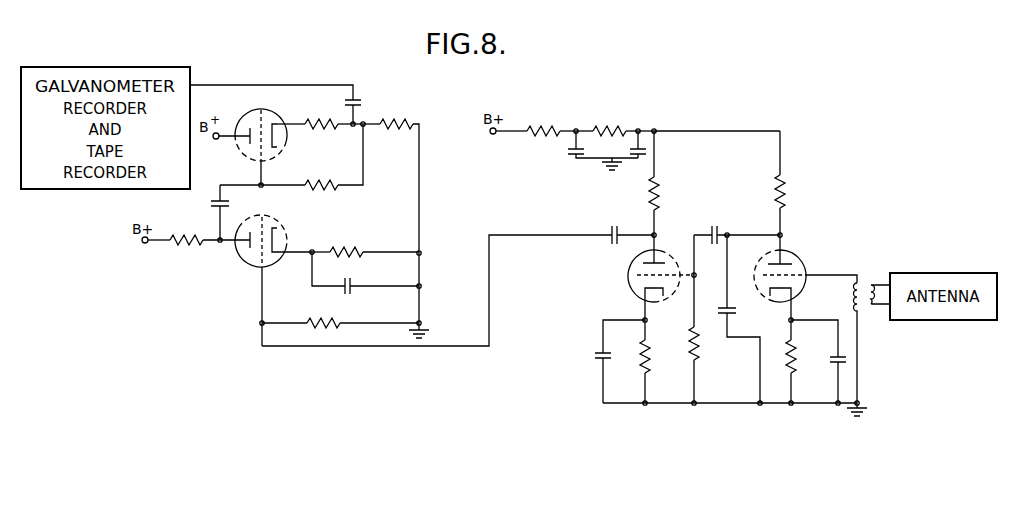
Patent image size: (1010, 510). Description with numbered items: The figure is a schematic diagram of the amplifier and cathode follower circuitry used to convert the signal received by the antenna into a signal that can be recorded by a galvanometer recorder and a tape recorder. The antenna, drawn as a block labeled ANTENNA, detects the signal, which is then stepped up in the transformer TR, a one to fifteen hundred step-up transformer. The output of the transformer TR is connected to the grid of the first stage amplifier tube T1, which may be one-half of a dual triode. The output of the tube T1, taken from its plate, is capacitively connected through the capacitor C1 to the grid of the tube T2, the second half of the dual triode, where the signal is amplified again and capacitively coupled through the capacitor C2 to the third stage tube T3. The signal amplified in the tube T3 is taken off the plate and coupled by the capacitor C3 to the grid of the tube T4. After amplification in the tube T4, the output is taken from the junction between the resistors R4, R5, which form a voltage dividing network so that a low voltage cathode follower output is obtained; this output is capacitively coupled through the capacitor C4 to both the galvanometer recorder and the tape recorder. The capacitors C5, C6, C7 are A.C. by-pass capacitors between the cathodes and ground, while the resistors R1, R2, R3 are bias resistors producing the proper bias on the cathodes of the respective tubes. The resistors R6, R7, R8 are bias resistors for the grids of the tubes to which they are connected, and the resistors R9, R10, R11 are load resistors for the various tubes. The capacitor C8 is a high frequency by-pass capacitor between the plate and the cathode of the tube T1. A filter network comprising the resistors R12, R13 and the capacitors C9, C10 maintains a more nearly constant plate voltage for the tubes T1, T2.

The first stage amplifier tube T1 is at (800, 292).
The second stage amplifier tube T2 is at (632, 286).
The third stage amplifier tube T3 is at (237, 258).
The cathode follower tube T4 is at (262, 110).
The cathode bias resistor R1 is at (786, 350).
The cathode bias resistor R2 is at (650, 360).
The cathode bias resistor R3 is at (340, 246).
The voltage dividing resistor R4 is at (312, 118).
The voltage dividing resistor R5 is at (388, 118).
The grid bias resistor R6 is at (699, 350).
The grid bias resistor R7 is at (318, 317).
The grid bias resistor R8 is at (314, 179).
The load resistor R9 is at (786, 195).
The load resistor R10 is at (660, 197).
The load resistor R11 is at (178, 246).
The filter network resistor R12 is at (533, 125).
The filter network resistor R13 is at (602, 125).
The coupling capacitor C1 is at (719, 230).
The coupling capacitor C2 is at (619, 230).
The coupling capacitor C3 is at (208, 203).
The output coupling capacitor C4 is at (362, 103).
The A.C. by-pass capacitor C5 is at (828, 359).
The A.C. by-pass capacitor C6 is at (593, 356).
The A.C. by-pass capacitor C7 is at (352, 280).
The high frequency by-pass capacitor C8 is at (737, 312).
The filter capacitor C9 is at (566, 151).
The filter capacitor C10 is at (647, 151).
The step-up transformer TR is at (863, 309).